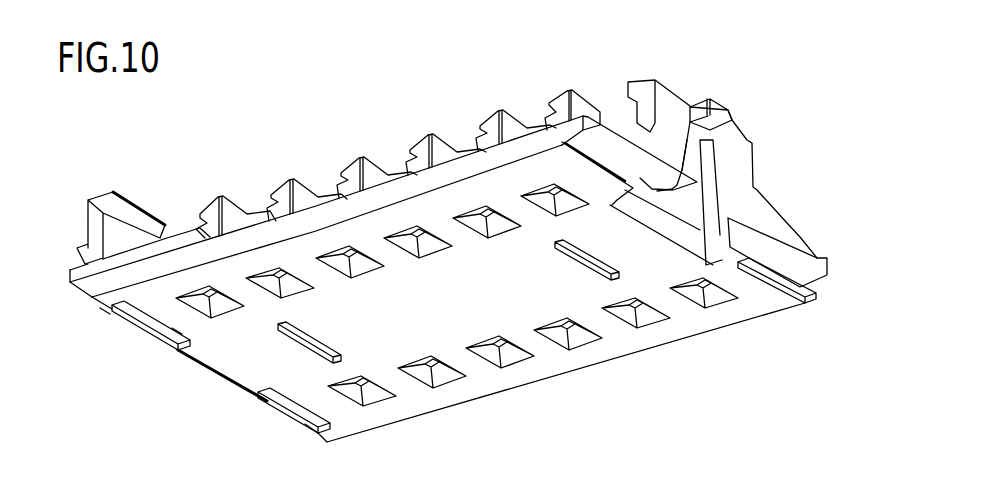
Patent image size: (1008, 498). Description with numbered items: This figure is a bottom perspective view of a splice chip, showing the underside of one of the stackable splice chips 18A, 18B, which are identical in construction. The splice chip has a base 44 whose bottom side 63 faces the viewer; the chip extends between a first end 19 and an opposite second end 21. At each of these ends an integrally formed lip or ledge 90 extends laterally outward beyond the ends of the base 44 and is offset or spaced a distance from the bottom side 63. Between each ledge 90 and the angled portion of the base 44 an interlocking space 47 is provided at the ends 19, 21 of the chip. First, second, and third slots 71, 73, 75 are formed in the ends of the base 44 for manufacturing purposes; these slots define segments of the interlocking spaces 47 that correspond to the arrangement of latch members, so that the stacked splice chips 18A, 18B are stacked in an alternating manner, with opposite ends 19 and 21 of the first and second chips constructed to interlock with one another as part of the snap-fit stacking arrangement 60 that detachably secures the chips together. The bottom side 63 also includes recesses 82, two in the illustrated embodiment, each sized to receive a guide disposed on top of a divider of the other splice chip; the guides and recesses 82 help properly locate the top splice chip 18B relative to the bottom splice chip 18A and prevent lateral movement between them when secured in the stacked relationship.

The first splice chip 18A is at (750, 87).
The second splice chip 18B is at (711, 113).
The second end 21 is at (796, 116).
The base 44 is at (410, 192).
The interlocking space 47 is at (578, 135).
The snap-fit stacking arrangement 60 is at (104, 316).
The bottom side 63 is at (545, 368).
The first slot 71 is at (309, 421).
The second slot 73 is at (172, 331).
The third slot 75 is at (667, 217).
The recess 82 is at (320, 339).
The ledge 90 is at (78, 268).
The first end 19 is at (106, 340).